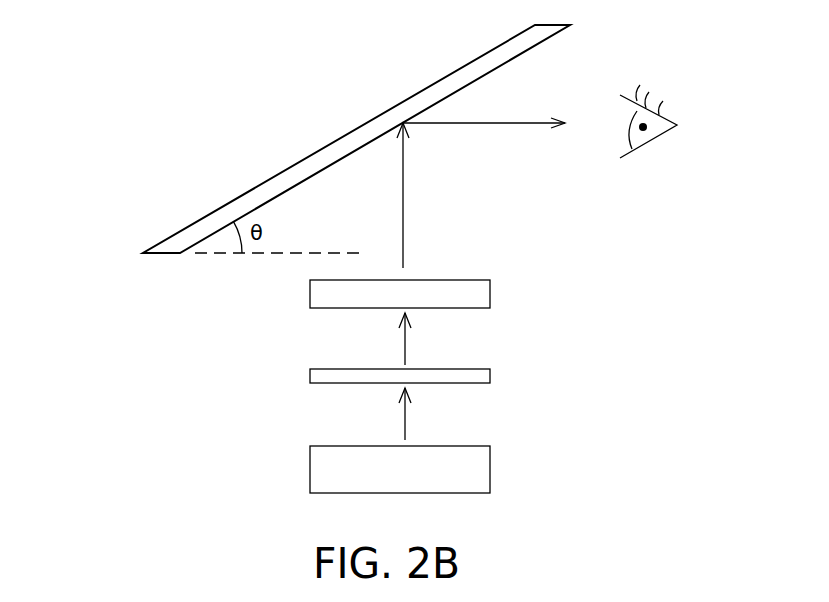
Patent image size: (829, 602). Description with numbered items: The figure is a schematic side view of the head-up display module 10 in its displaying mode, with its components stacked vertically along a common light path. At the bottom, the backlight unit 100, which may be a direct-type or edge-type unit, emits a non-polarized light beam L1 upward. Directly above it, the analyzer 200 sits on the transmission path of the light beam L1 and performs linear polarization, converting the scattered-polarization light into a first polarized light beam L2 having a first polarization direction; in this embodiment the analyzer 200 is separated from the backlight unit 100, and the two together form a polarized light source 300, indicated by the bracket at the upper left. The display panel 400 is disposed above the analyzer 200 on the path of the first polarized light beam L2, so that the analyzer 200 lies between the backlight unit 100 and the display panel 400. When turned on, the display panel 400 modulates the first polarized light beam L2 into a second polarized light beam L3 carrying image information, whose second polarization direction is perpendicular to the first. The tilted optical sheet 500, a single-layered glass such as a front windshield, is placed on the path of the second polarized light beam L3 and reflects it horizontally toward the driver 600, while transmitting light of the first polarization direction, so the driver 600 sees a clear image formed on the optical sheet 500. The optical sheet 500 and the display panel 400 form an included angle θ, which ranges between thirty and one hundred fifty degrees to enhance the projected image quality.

The head-up display module 10 is at (643, 506).
The backlight unit 100 is at (482, 476).
The analyzer 200 is at (482, 376).
The polarized light source 300 is at (82, 45).
The display panel 400 is at (482, 296).
The optical sheet 500 is at (360, 138).
The driver 600 is at (672, 109).
The light beam L1 is at (405, 417).
The first polarized light beam L2 is at (405, 338).
The second polarized light beam L3 is at (403, 210).